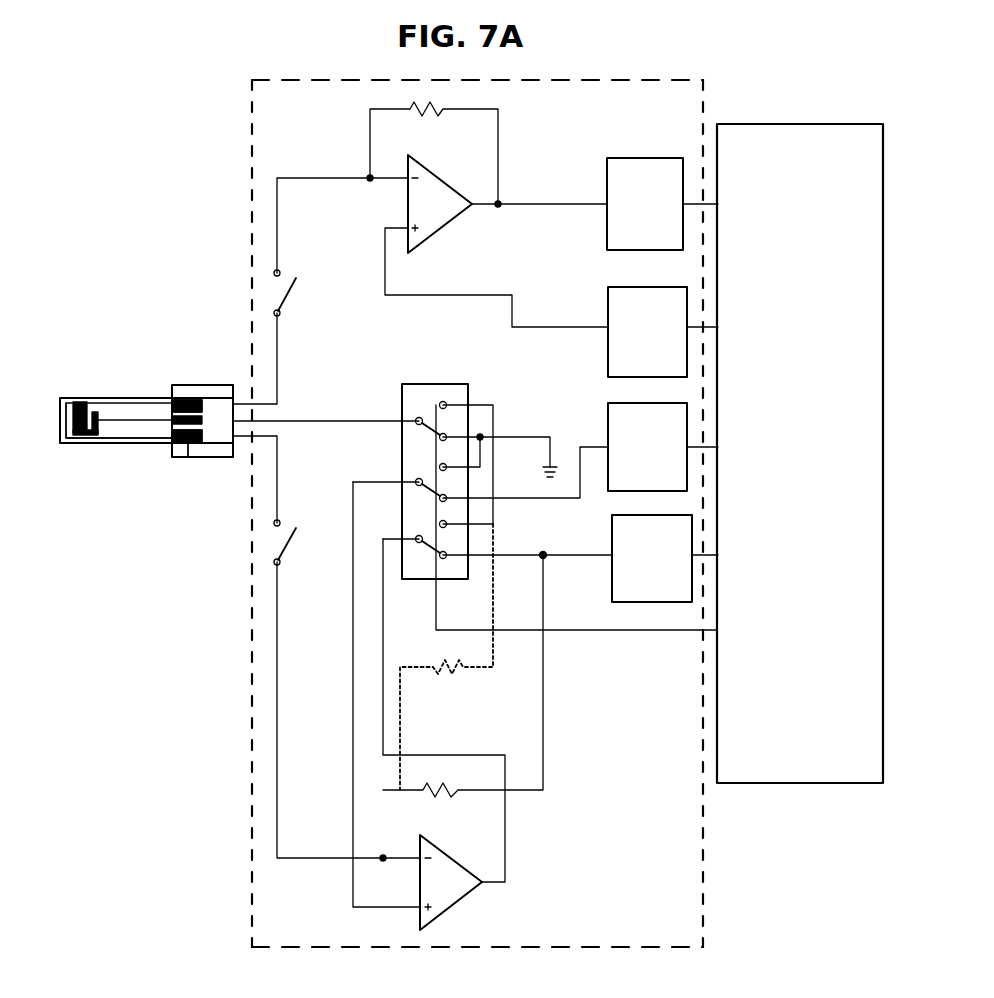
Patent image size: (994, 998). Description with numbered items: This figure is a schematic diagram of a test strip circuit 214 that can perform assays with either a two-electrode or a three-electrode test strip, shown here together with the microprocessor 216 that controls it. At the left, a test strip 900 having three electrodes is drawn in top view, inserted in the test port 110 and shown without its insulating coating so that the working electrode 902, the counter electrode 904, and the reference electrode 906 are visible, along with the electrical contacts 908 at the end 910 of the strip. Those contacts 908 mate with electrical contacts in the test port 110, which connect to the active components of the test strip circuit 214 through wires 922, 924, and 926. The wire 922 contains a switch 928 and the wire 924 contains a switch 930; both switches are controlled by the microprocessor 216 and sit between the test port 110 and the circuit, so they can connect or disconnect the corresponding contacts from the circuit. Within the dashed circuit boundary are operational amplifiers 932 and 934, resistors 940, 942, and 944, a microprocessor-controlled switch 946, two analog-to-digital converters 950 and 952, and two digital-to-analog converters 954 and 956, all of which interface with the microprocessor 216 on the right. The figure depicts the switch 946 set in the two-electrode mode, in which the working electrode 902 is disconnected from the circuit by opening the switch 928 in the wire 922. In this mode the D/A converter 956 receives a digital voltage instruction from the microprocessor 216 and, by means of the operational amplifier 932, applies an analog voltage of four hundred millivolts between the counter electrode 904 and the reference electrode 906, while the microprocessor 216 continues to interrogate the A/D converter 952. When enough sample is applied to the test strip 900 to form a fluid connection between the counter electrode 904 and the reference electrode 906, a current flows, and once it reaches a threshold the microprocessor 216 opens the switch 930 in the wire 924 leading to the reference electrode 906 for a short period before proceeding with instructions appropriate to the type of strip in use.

The test strip circuit 214 is at (706, 84).
The microprocessor 216 is at (822, 551).
The test port 110 is at (236, 388).
The test strip 900 is at (66, 400).
The working electrode 902 is at (82, 404).
The counter electrode 904 is at (96, 438).
The reference electrode 906 is at (70, 443).
The electrical contacts 908 is at (220, 410).
The end 910 is at (188, 457).
The wire 922 is at (277, 228).
The wire 924 is at (277, 805).
The wire 926 is at (340, 420).
The switch 928 is at (296, 290).
The switch 930 is at (292, 545).
The operational amplifier 932 is at (465, 896).
The operational amplifier 934 is at (452, 222).
The resistor 940 is at (458, 792).
The resistor 942 is at (465, 668).
The resistor 944 is at (442, 112).
The microprocessor-controlled switch 946 is at (456, 384).
The analog-to-digital converter 950 is at (645, 158).
The analog-to-digital converter 952 is at (612, 550).
The digital-to-analog converter 954 is at (608, 308).
The digital-to-analog converter 956 is at (608, 430).